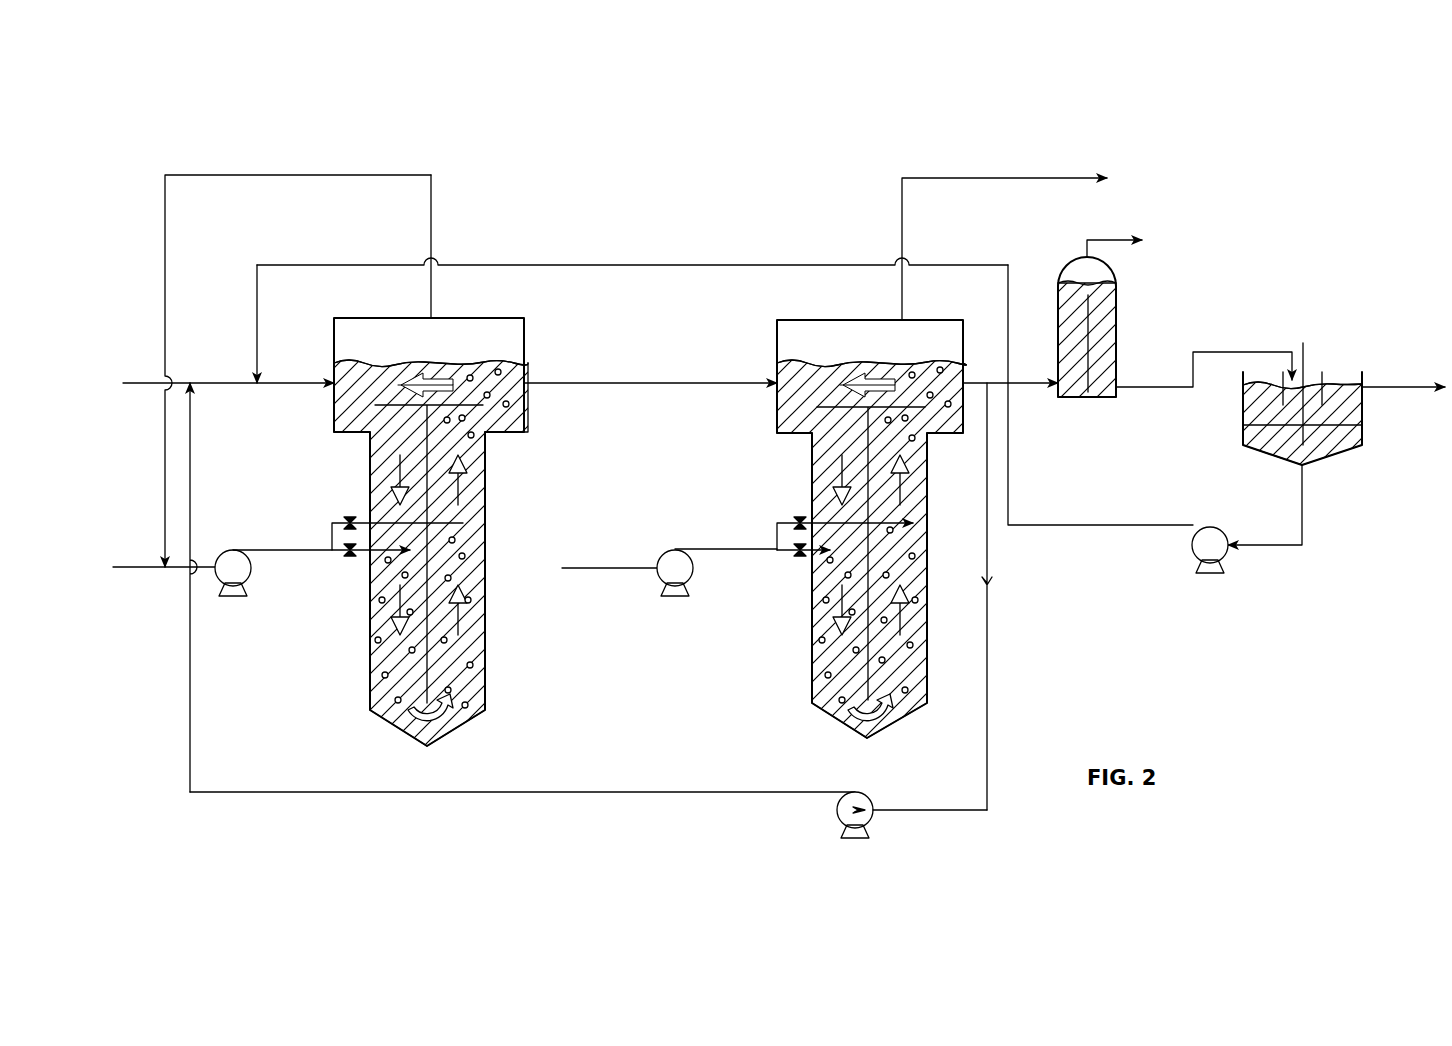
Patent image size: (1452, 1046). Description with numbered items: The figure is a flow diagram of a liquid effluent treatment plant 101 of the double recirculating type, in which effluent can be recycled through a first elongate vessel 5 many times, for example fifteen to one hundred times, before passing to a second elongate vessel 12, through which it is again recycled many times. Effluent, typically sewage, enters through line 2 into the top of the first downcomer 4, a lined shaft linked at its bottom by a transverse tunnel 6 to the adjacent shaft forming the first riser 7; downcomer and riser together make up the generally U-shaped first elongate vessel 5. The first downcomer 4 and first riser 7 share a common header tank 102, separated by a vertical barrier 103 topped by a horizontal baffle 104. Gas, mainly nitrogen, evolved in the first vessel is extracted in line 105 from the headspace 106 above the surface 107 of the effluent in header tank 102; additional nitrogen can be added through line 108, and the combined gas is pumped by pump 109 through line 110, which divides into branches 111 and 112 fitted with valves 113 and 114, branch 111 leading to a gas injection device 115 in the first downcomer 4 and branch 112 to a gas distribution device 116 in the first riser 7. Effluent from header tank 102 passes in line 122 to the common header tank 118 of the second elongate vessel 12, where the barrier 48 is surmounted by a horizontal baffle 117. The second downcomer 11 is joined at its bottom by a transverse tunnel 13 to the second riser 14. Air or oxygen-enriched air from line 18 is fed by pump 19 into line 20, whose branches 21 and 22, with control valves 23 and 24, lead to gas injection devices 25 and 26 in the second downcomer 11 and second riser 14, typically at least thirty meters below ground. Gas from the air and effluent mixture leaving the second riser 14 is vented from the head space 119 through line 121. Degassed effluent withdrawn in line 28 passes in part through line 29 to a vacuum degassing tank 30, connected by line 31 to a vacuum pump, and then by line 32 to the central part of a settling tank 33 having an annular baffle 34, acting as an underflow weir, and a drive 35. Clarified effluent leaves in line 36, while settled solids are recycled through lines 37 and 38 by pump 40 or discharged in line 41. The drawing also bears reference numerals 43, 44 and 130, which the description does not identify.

The line 2 is at (223, 383).
The first downcomer 4 is at (370, 680).
The first elongate vessel 5 is at (370, 642).
The transverse tunnel 6 is at (425, 743).
The first riser 7 is at (461, 560).
The second downcomer 11 is at (835, 652).
The second elongate vessel 12 is at (927, 629).
The transverse tunnel 13 is at (870, 738).
The second riser 14 is at (927, 568).
The line 18 is at (608, 565).
The pump 19 is at (658, 553).
The line 20 is at (697, 550).
The branch 21 is at (772, 550).
The branch 22 is at (795, 524).
The control valve 23 is at (797, 556).
The control valve 24 is at (801, 515).
The gas injection device 25 is at (826, 556).
The gas injection device 26 is at (904, 526).
The line 28 is at (977, 383).
The line 29 is at (1029, 383).
The vacuum degassing tank 30 is at (1112, 330).
The line 31 is at (1104, 240).
The line 32 is at (1169, 387).
The settling tank 33 is at (1244, 418).
The annular baffle 34 is at (1336, 375).
The drive 35 is at (1325, 372).
The line 36 is at (1402, 388).
The line 37 is at (1302, 534).
The line 38 is at (1107, 525).
The pump 40 is at (1211, 529).
The line 41 is at (991, 566).
The recycle return line 43 is at (663, 793).
The recycle pump 44 is at (827, 803).
The barrier 48 is at (876, 680).
The plant 101 is at (617, 212).
The common header tank 102 is at (524, 334).
The vertical barrier 103 is at (447, 671).
The horizontal baffle 104 is at (472, 363).
The line 105 is at (431, 240).
The headspace 106 is at (380, 340).
The surface 107 is at (522, 362).
The line 108 is at (133, 567).
The pump 109 is at (234, 555).
The line 110 is at (288, 550).
The branch 111 is at (334, 558).
The branch 112 is at (325, 530).
The valve 113 is at (350, 563).
The valve 114 is at (350, 513).
The gas injection device 115 is at (417, 548).
The gas distribution device 116 is at (461, 523).
The horizontal baffle 117 is at (927, 458).
The common header tank 118 is at (777, 356).
The head space 119 is at (850, 336).
The line 121 is at (996, 178).
The line 122 is at (632, 381).
The second reactor head tank wall 130 is at (932, 362).